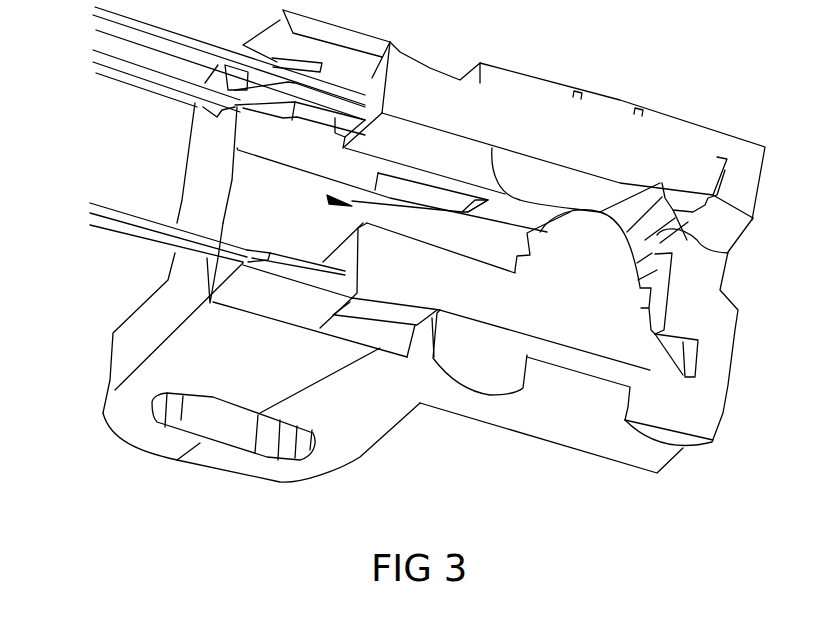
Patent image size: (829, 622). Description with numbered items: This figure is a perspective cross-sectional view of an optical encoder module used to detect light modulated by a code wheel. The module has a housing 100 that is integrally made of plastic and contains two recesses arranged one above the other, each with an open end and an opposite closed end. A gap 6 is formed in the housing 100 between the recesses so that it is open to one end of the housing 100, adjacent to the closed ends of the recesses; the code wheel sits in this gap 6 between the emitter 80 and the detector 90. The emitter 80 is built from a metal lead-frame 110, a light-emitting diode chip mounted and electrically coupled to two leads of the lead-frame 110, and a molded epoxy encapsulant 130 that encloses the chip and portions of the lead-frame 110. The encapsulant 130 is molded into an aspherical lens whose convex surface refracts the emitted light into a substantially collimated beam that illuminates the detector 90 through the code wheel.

The gap 6 is at (340, 201).
The emitter 80 is at (570, 307).
The detector 90 is at (530, 133).
The housing 100 is at (697, 137).
The metal lead-frame 110 is at (125, 230).
The molded epoxy encapsulant 130 is at (640, 343).